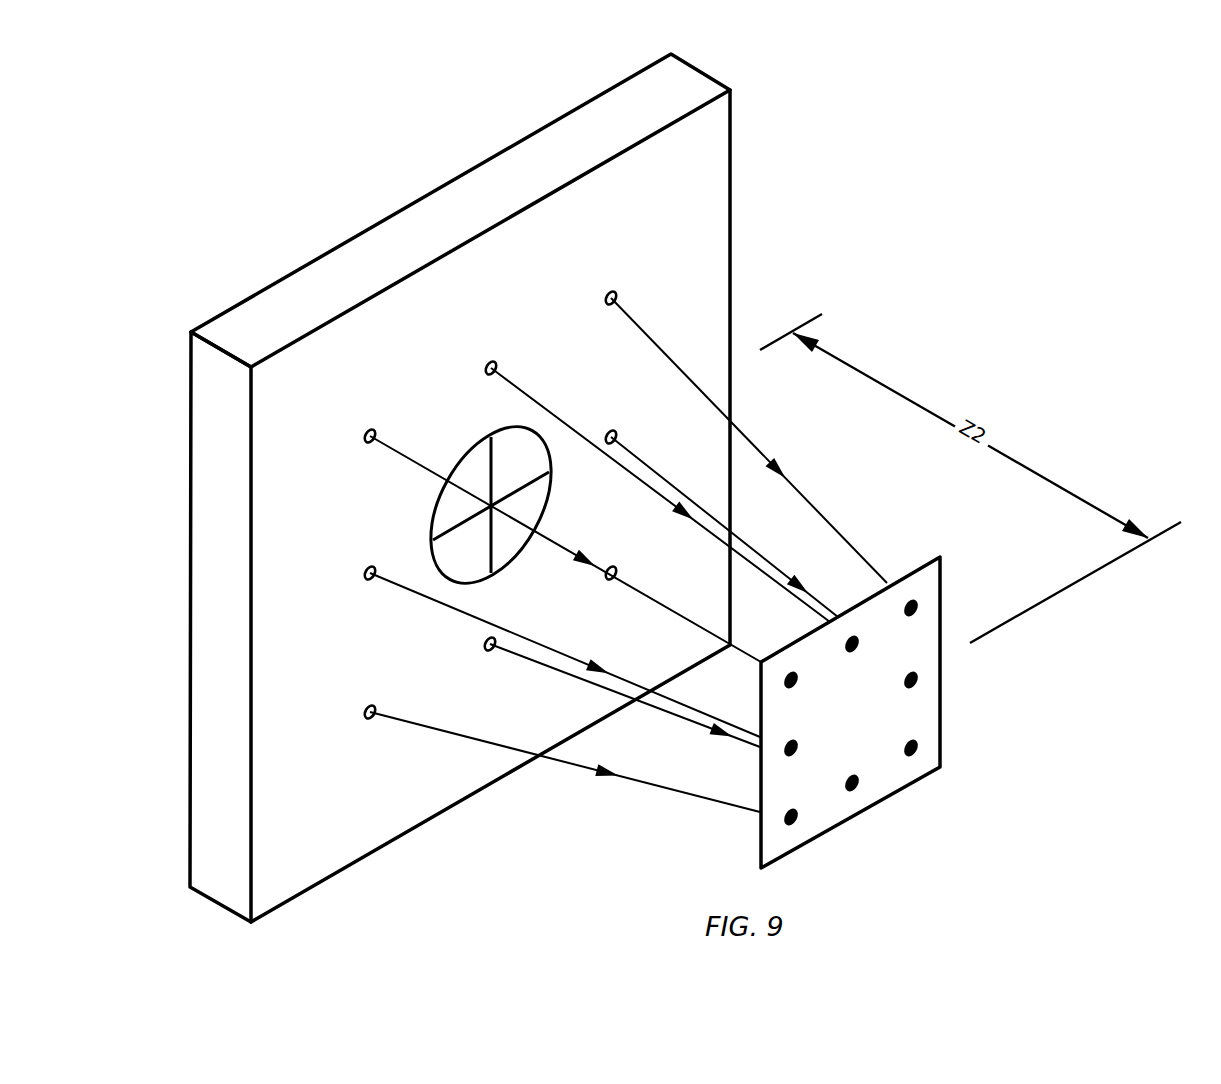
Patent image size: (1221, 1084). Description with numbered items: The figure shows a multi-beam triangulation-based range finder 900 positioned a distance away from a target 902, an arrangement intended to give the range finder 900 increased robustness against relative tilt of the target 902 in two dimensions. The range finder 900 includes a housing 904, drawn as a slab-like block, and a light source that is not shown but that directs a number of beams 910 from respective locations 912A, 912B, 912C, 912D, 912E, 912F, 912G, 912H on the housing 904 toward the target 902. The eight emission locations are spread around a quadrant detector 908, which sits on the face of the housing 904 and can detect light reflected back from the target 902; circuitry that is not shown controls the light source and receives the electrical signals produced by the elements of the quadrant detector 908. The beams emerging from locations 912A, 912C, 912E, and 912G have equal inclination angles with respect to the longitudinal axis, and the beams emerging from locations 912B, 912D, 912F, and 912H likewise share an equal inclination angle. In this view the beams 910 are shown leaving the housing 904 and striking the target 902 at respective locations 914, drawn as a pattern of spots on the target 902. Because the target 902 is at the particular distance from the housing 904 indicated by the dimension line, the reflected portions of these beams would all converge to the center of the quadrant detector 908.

The multi-beam triangulation-based range finder 900 is at (313, 168).
The target 902 is at (758, 838).
The housing 904 is at (453, 213).
The quadrant detector 908 is at (490, 436).
The beams 910 is at (573, 765).
The location 912A is at (616, 292).
The location 912B is at (616, 431).
The location 912C is at (616, 567).
The location 912D is at (489, 654).
The location 912E is at (364, 718).
The location 912F is at (364, 579).
The location 912G is at (364, 442).
The location 912H is at (492, 359).
The locations 914 is at (858, 786).